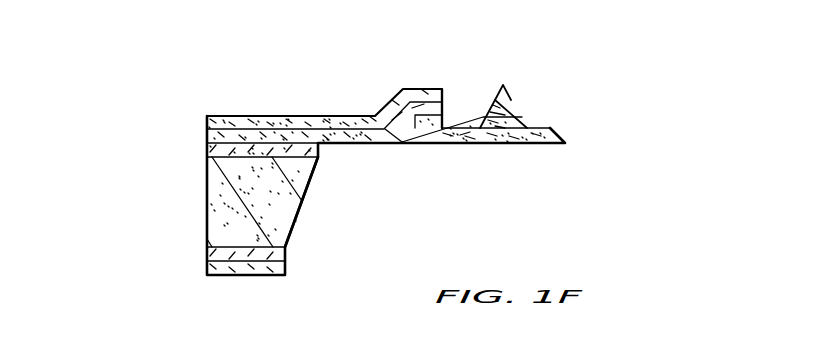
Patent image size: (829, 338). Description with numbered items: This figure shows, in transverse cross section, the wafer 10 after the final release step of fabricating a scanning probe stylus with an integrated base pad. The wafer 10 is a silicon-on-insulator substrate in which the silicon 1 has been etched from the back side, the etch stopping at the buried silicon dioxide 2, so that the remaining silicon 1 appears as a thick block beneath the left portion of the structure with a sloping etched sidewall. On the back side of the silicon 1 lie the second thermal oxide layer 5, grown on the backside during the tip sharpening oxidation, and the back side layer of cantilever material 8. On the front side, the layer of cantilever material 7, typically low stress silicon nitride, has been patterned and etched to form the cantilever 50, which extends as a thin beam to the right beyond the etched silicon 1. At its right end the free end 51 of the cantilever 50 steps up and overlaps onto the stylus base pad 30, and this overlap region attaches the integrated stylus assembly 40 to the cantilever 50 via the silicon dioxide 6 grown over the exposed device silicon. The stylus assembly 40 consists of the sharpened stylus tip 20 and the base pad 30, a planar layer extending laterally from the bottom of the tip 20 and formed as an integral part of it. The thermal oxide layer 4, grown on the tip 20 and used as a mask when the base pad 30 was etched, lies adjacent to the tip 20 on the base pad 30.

The wafer 10 is at (155, 83).
The cantilever 50 is at (298, 112).
The cantilever material 7 is at (206, 123).
The buried silicon dioxide 2 is at (206, 151).
The silicon 1 is at (206, 222).
The second thermal oxide layer 5 is at (206, 253).
The cantilever material 8 is at (206, 267).
The free end 51 is at (421, 89).
The silicon dioxide 6 is at (445, 110).
The thermal oxide layer 4 is at (465, 119).
The stylus tip 20 is at (506, 89).
The integrated stylus assembly 40 is at (534, 79).
The stylus base pad 30 is at (543, 146).